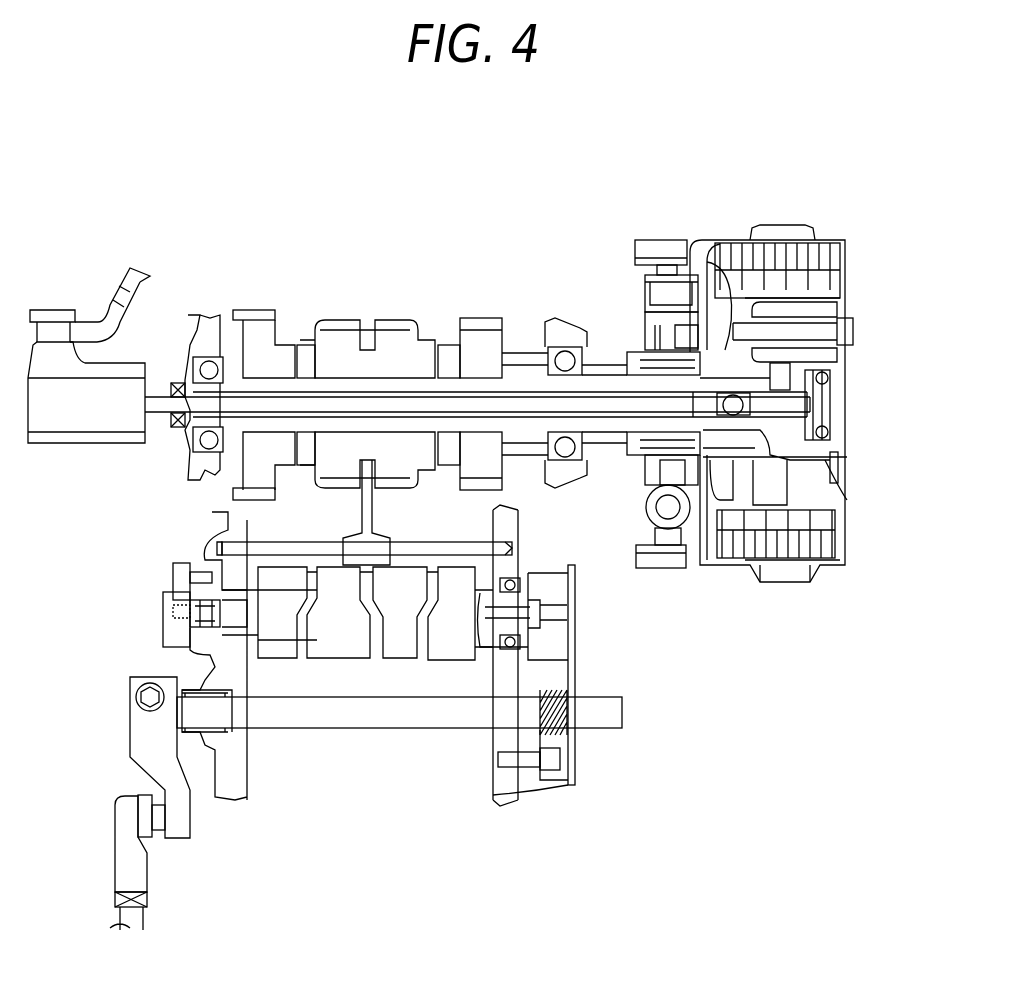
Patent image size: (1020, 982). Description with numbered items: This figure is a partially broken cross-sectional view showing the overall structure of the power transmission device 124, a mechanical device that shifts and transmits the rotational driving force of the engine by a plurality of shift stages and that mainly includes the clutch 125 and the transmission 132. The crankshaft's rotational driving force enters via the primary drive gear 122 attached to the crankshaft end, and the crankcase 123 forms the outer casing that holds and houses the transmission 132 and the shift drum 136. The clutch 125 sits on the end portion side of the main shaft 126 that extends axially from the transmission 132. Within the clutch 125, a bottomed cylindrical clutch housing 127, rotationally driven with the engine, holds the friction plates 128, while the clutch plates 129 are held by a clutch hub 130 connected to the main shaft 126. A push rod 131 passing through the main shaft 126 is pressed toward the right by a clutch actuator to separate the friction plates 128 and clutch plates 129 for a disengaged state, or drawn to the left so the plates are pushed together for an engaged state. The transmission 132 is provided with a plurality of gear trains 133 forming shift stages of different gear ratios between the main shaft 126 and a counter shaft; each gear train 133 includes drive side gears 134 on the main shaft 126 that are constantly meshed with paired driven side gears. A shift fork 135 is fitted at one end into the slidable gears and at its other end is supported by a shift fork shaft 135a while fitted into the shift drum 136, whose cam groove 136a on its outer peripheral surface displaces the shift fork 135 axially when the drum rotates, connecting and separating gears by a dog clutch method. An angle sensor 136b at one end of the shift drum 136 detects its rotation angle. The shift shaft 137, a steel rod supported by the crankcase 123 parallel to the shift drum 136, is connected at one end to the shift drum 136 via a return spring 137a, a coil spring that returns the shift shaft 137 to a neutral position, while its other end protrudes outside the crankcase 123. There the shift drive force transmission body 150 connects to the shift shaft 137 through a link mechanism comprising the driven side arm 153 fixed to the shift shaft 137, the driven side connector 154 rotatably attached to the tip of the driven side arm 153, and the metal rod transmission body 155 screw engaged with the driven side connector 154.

The primary drive gear 122 is at (663, 240).
The crankcase 123 is at (250, 795).
The power transmission device 124 is at (98, 161).
The clutch 125 is at (859, 236).
The main shaft 126 is at (480, 352).
The clutch housing 127 is at (785, 575).
The friction plate 128 is at (792, 245).
The clutch plate 129 is at (757, 240).
The clutch hub 130 is at (703, 245).
The push rod 131 is at (155, 445).
The transmission 132 is at (244, 302).
The gear train 133 is at (343, 318).
The drive side gear 134 is at (365, 404).
The shift fork 135 is at (380, 505).
The shift fork shaft 135a is at (270, 542).
The shift drum 136 is at (335, 660).
The cam groove 136a is at (297, 640).
The angle sensor 136b is at (170, 600).
The shift shaft 137 is at (410, 730).
The return spring 137a is at (570, 785).
The shift drive force transmission body 150 is at (118, 786).
The driven side arm 153 is at (130, 698).
The driven side connector 154 is at (117, 858).
The transmission body 155 is at (145, 917).